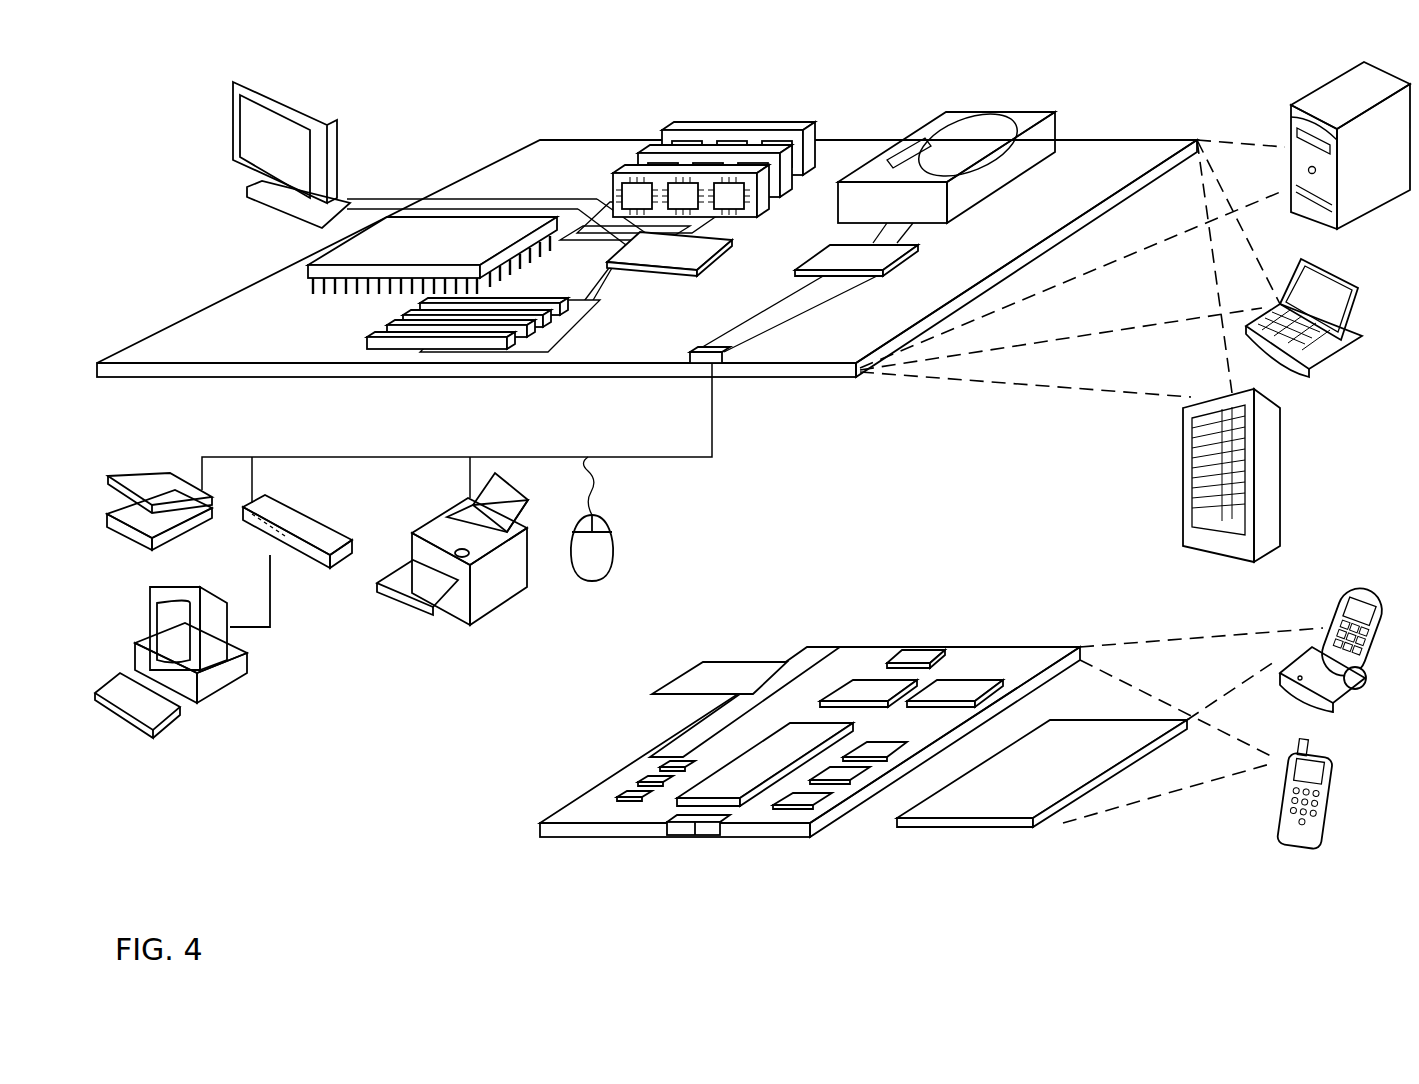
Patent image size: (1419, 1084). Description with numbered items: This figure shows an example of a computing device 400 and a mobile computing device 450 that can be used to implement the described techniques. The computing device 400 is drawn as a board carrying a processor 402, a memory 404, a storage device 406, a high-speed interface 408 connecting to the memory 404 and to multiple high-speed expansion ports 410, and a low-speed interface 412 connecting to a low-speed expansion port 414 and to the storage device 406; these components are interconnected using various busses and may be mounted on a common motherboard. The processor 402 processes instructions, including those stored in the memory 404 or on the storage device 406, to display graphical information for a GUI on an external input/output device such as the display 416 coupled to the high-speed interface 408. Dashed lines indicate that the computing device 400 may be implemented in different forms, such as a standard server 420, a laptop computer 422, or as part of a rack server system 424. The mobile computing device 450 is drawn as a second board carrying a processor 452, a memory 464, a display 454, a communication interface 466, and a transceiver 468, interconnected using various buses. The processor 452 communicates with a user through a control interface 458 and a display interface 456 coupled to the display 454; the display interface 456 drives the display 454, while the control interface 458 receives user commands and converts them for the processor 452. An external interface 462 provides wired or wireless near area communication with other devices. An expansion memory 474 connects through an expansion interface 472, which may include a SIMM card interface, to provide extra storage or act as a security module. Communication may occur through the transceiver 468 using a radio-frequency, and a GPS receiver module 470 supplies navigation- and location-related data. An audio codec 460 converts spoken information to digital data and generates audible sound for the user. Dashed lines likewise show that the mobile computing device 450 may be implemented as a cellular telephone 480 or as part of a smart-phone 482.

The computing device 400 is at (452, 107).
The processor 402 is at (310, 270).
The memory 404 is at (682, 130).
The storage device 406 is at (937, 114).
The high-speed interface 408 is at (642, 250).
The high-speed expansion ports 410 is at (397, 333).
The low-speed interface 412 is at (835, 257).
The low-speed expansion port 414 is at (722, 363).
The display 416 is at (233, 82).
The standard server 420 is at (1291, 119).
The laptop computer 422 is at (1356, 282).
The rack server system 424 is at (1183, 507).
The mobile computing device 450 is at (510, 838).
The processor 452 is at (735, 790).
The display 454 is at (997, 808).
The display interface 456 is at (812, 797).
The control interface 458 is at (850, 773).
The audio codec 460 is at (877, 748).
The external interface 462 is at (697, 827).
The memory 464 is at (638, 780).
The communication interface 466 is at (865, 688).
The transceiver 468 is at (953, 688).
The GPS receiver module 470 is at (923, 648).
The expansion interface 472 is at (792, 657).
The expansion memory 474 is at (699, 661).
The cellular telephone 480 is at (1338, 602).
The smart-phone 482 is at (1278, 793).